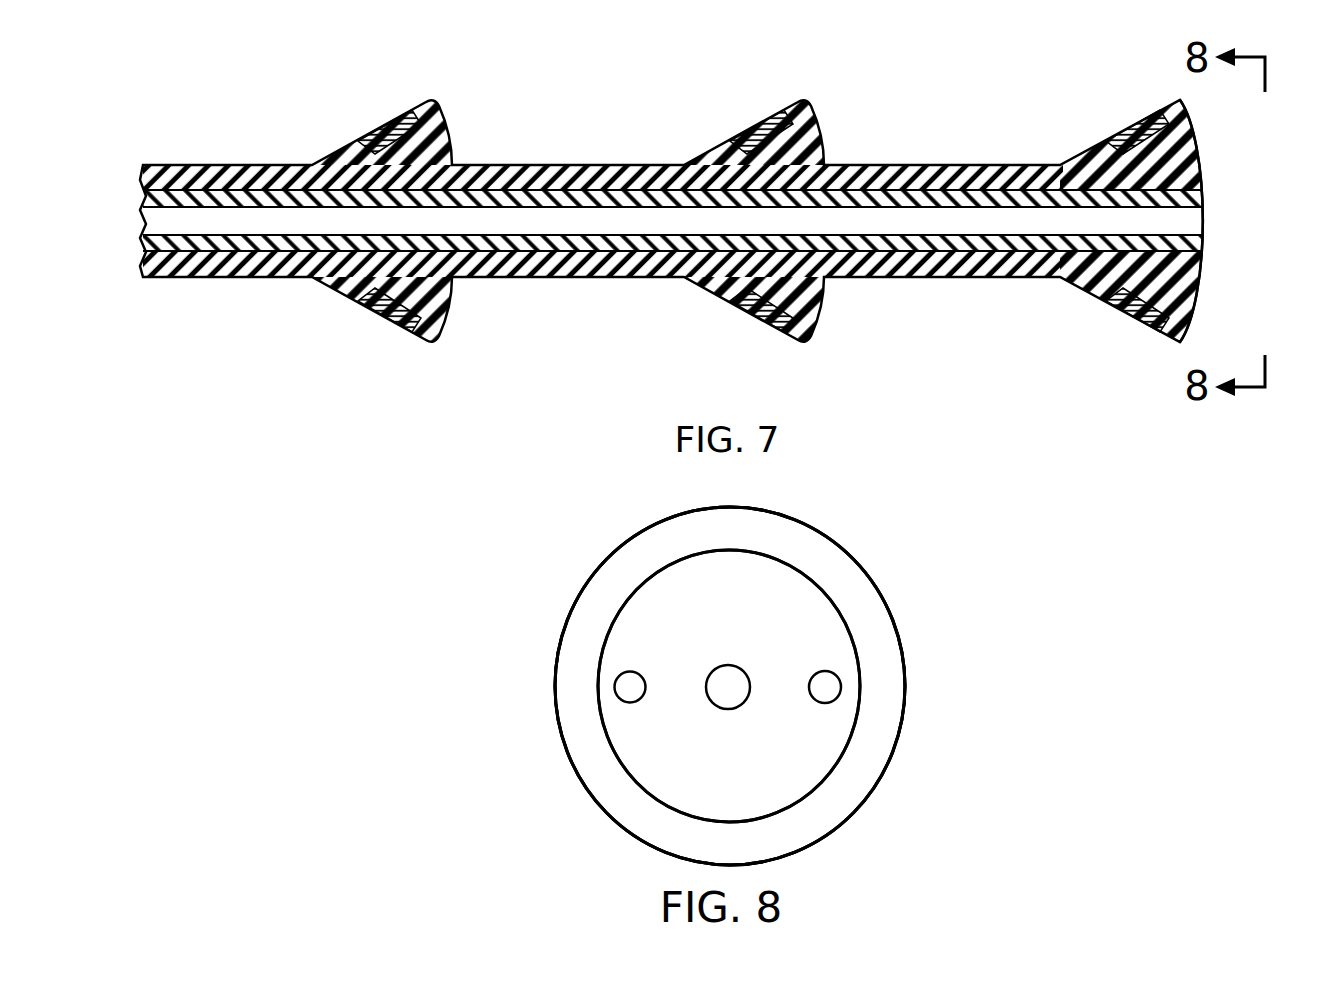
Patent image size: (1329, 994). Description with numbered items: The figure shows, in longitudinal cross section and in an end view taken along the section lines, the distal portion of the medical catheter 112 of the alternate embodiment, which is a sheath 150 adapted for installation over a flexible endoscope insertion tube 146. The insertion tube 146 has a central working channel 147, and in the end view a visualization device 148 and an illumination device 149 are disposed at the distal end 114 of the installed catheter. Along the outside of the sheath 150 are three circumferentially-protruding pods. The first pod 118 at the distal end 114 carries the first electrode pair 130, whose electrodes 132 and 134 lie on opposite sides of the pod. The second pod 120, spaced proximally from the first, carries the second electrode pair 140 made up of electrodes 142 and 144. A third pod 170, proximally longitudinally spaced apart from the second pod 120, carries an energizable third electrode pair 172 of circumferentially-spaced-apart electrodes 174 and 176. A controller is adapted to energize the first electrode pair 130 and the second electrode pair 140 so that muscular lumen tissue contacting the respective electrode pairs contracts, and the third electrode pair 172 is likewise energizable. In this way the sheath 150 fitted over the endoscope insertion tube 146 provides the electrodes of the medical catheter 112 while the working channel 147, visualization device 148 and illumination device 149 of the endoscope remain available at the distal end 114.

In FIG. 7, the medical catheter 112 is at (724, 227).
In FIG. 8, the medical catheter 112 is at (876, 595).
In FIG. 7, the distal end 114 is at (1203, 150).
In FIG. 8, the distal end 114 is at (590, 575).
In FIG. 7, the first pod 118 is at (1184, 226).
In FIG. 8, the first pod 118 is at (706, 686).
In FIG. 7, the second pod 120 is at (800, 237).
In FIG. 7, the first electrode pair 130 is at (1146, 148).
In FIG. 7, the electrode 132 is at (1134, 137).
In FIG. 7, the electrode 134 is at (1132, 309).
In FIG. 7, the second electrode pair 140 is at (774, 148).
In FIG. 7, the electrode 142 is at (756, 137).
In FIG. 7, the electrode 144 is at (759, 329).
In FIG. 7, the flexible endoscope insertion tube 146 is at (529, 190).
In FIG. 8, the flexible endoscope insertion tube 146 is at (838, 756).
In FIG. 7, the working channel 147 is at (550, 222).
In FIG. 8, the working channel 147 is at (721, 666).
In FIG. 8, the visualization device 148 is at (820, 672).
In FIG. 8, the illumination device 149 is at (628, 672).
In FIG. 7, the sheath 150 is at (653, 178).
In FIG. 7, the third pod 170 is at (428, 234).
In FIG. 7, the third electrode pair 172 is at (397, 148).
In FIG. 7, the electrode 174 is at (384, 137).
In FIG. 7, the electrode 176 is at (385, 329).